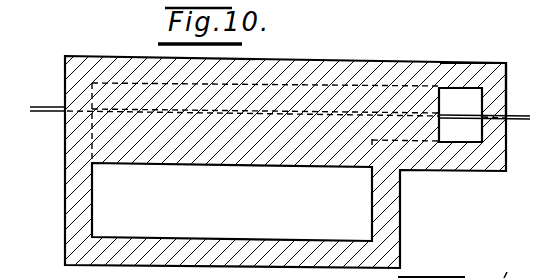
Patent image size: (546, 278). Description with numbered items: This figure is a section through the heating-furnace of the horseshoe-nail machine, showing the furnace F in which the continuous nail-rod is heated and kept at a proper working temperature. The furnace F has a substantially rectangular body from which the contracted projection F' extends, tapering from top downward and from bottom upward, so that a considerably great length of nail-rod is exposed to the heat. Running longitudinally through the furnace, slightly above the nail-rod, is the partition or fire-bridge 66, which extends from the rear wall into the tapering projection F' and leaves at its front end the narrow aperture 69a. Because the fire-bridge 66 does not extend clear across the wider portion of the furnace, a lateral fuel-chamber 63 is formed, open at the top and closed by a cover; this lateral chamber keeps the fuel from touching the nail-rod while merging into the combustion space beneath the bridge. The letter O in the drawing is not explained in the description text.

The furnace F is at (268, 162).
The contracted projection F' is at (484, 91).
The shaft axis O is at (285, 141).
The fire-bridge 66 is at (286, 123).
The lateral fuel-chamber 63 is at (232, 202).
The narrow aperture 69a is at (462, 133).